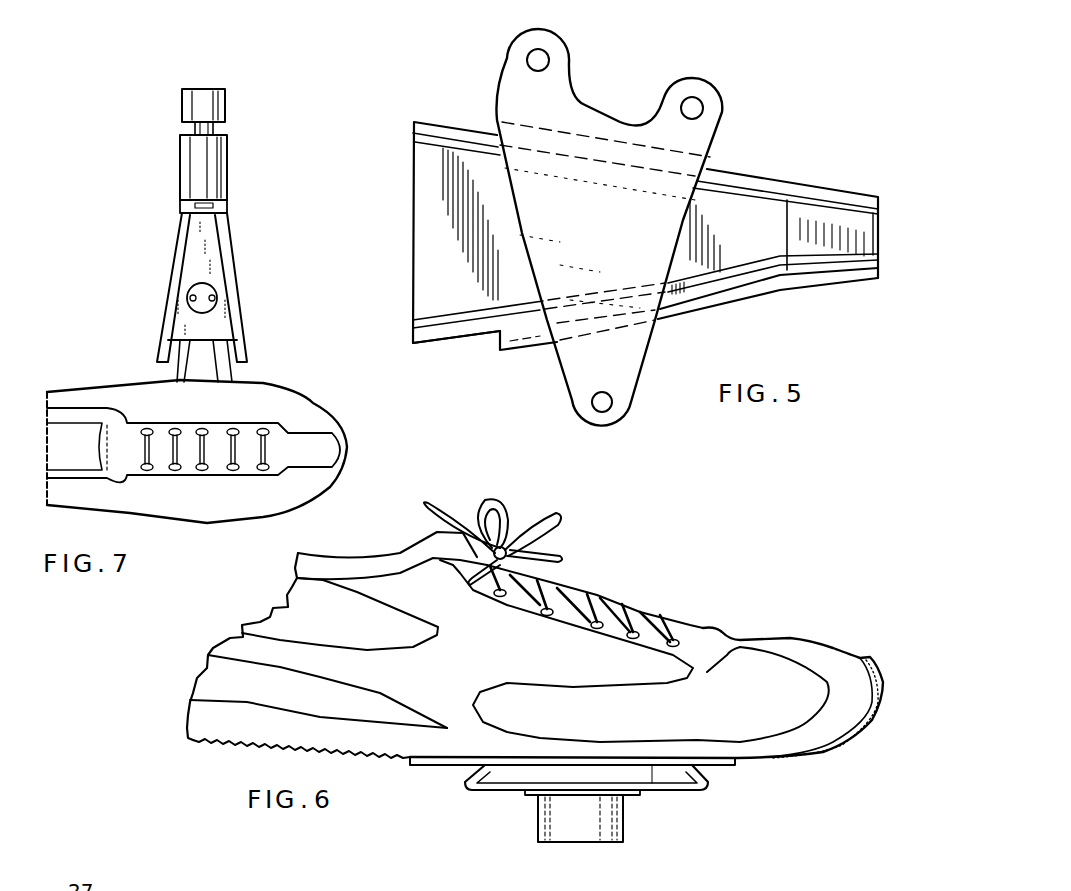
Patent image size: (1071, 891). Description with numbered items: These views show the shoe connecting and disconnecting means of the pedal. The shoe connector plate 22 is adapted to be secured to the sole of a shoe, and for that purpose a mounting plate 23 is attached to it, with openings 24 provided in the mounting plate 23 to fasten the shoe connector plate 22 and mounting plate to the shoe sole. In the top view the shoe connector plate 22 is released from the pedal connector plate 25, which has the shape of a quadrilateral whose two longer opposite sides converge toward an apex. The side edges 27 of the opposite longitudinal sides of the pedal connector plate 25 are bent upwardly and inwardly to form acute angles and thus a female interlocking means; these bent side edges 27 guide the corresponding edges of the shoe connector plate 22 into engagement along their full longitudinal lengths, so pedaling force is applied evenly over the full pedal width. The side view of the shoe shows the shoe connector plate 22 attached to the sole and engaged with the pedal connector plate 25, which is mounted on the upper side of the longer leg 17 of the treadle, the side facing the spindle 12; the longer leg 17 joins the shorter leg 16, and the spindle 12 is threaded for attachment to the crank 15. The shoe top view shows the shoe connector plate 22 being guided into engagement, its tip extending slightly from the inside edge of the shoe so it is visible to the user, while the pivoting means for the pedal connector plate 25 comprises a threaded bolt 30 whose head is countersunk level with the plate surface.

In FIG. 7, the spindle 12 is at (195, 128).
In FIG. 7, the crank 15 is at (223, 103).
In FIG. 7, the shorter leg 16 is at (195, 165).
In FIG. 6, the longer leg 17 is at (620, 827).
In FIG. 7, the longer leg 17 is at (195, 212).
In FIG. 5, the shoe connector plate 22 is at (440, 237).
In FIG. 7, the shoe connector plate 22 is at (195, 348).
In FIG. 5, the mounting plate 23 is at (609, 227).
In FIG. 6, the mounting plate 23 is at (433, 762).
In FIG. 5, the openings 24 is at (545, 55).
In FIG. 6, the openings 24 is at (652, 765).
In FIG. 5, the pedal connector plate 25 is at (843, 257).
In FIG. 6, the pedal connector plate 25 is at (505, 790).
In FIG. 7, the pedal connector plate 25 is at (200, 265).
In FIG. 5, the side edges 27 is at (823, 193).
In FIG. 6, the side edges 27 is at (472, 770).
In FIG. 7, the threaded bolt 30 is at (218, 290).